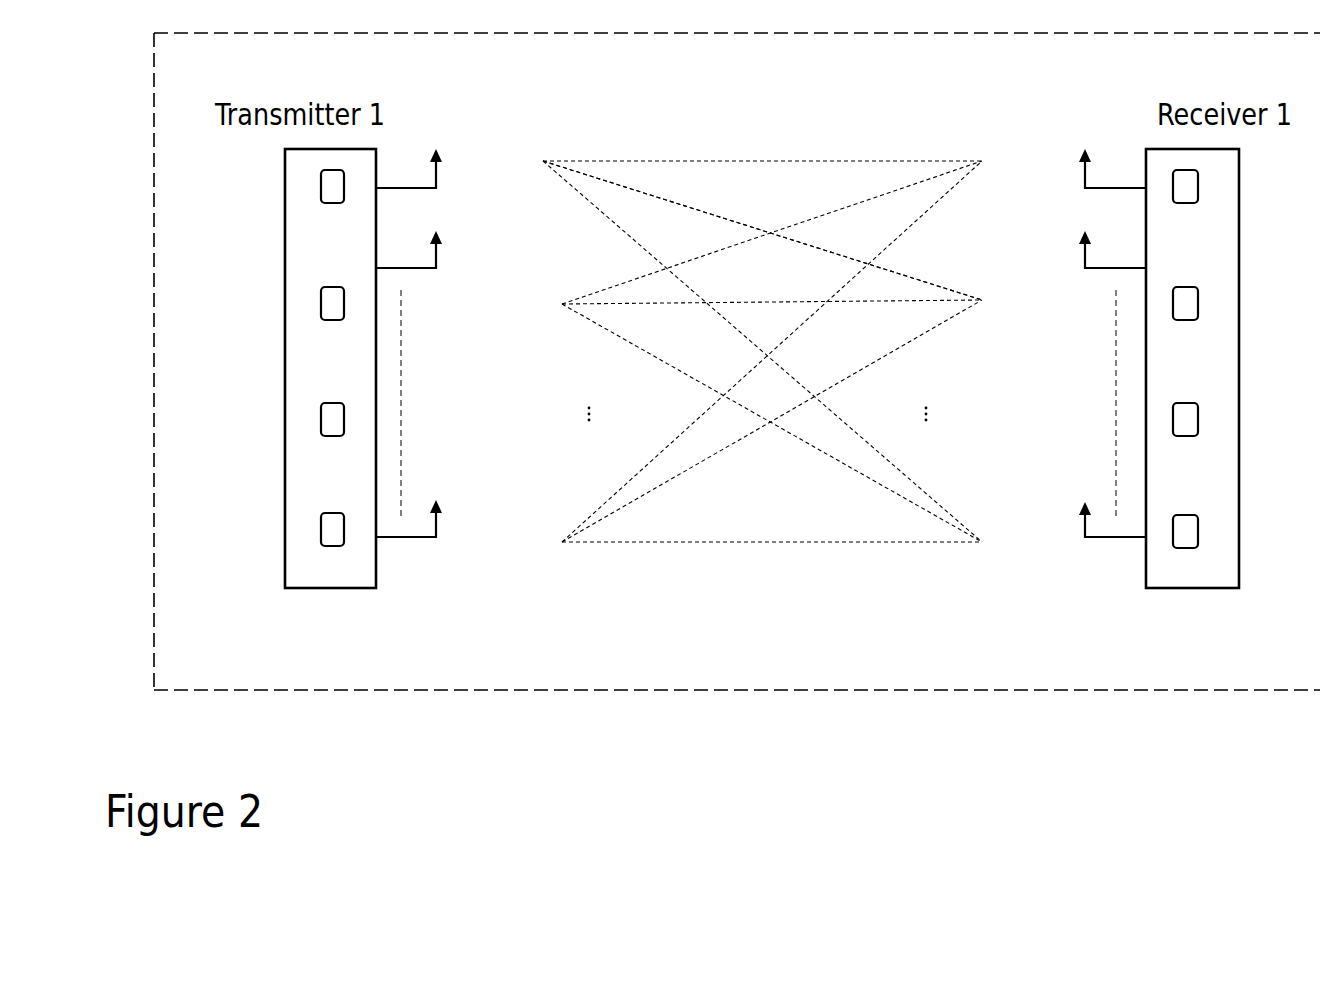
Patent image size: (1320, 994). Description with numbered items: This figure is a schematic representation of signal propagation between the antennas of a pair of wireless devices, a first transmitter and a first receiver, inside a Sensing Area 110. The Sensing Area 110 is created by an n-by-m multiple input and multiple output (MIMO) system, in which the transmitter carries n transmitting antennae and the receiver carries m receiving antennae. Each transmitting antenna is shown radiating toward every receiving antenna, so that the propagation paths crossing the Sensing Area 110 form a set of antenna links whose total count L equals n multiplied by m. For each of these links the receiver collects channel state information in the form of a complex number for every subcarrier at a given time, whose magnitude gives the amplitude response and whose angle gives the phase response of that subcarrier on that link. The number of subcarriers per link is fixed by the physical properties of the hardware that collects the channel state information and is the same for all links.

The Sensing Area 110 is at (737, 361).